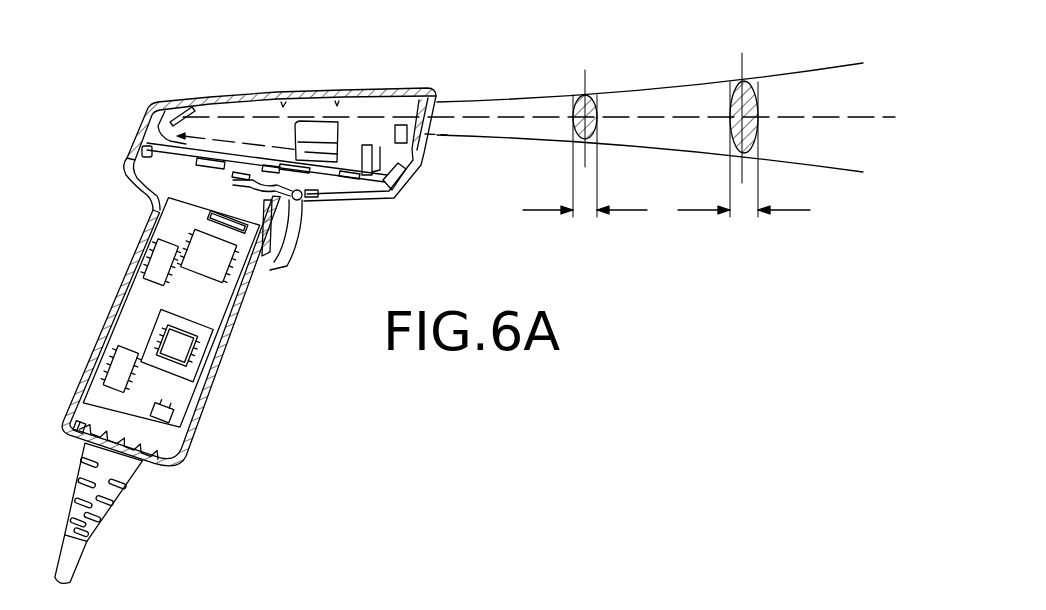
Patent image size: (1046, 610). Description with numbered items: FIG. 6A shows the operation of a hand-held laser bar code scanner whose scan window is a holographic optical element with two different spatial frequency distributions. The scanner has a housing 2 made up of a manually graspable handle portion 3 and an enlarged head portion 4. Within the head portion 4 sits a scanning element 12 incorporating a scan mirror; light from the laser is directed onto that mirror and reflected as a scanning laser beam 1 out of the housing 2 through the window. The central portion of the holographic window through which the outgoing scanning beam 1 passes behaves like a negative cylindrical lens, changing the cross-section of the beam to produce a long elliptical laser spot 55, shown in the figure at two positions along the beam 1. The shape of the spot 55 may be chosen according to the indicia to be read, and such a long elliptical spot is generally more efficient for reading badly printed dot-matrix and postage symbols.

The scanning laser beam 1 is at (787, 77).
The housing 2 is at (101, 264).
The handle portion 3 is at (226, 356).
The head portion 4 is at (307, 92).
The scanning element 12 is at (176, 116).
The long elliptical laser spot 55 is at (730, 86).